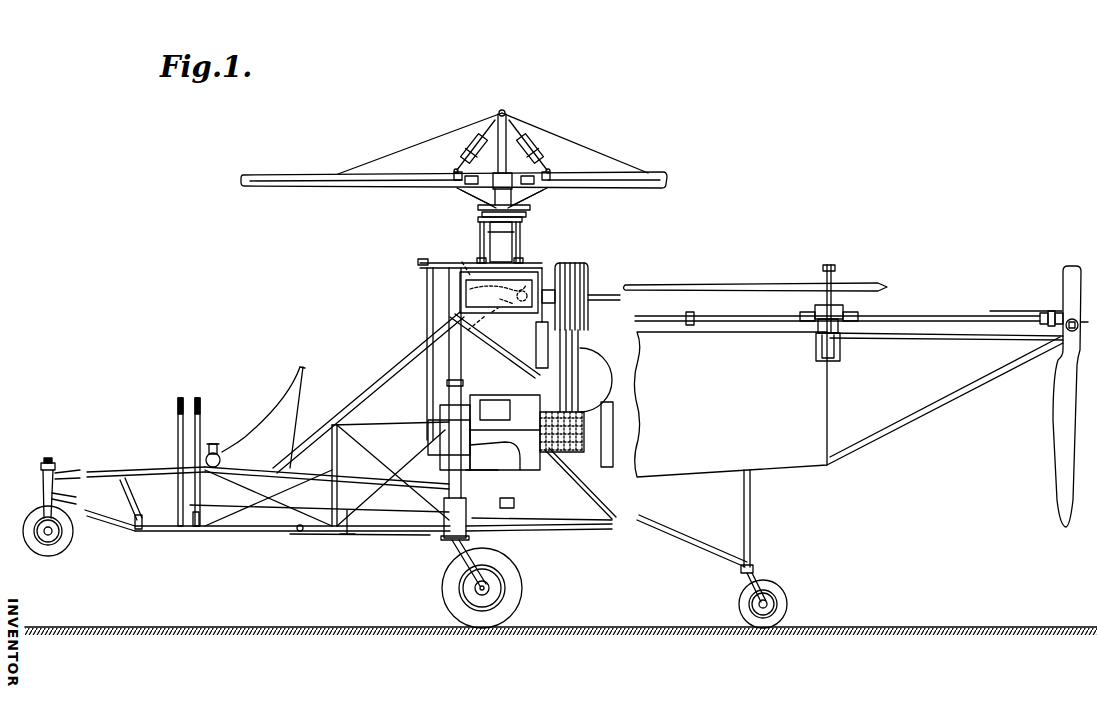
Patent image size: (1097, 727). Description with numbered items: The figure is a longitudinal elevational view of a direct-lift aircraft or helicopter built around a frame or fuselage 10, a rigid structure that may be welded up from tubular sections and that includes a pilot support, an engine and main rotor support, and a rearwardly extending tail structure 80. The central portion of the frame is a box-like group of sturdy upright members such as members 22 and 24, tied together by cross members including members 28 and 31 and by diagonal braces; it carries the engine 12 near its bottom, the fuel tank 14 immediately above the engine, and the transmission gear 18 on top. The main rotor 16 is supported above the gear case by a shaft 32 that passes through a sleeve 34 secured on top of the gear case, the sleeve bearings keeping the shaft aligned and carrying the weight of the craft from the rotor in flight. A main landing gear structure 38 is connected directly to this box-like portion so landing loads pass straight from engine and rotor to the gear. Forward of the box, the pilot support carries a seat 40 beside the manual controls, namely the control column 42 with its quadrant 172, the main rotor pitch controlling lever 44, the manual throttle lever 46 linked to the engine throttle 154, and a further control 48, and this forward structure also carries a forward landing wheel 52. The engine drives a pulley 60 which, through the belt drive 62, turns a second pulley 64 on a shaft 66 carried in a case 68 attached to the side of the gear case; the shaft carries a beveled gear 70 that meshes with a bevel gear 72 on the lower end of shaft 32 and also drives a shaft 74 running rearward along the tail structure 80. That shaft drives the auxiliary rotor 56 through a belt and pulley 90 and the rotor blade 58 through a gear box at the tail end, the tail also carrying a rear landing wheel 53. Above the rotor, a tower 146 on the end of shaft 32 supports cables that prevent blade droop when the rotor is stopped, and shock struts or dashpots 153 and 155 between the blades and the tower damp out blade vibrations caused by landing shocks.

The frame or fuselage 10 is at (408, 540).
The engine 12 is at (470, 412).
The fuel tank 14 is at (448, 342).
The main rotor 16 is at (378, 182).
The transmission gear 18 is at (425, 279).
The upright member 22 is at (406, 362).
The upright member 24 is at (560, 525).
The cross member 28 is at (505, 532).
The cross member 31 is at (458, 300).
The shaft 32 is at (513, 198).
The sleeve 34 is at (500, 246).
The main landing gear structure 38 is at (446, 540).
The seat 40 is at (302, 370).
The control column 42 is at (179, 400).
The main rotor pitch controlling lever 44 is at (200, 400).
The manual throttle lever 46 is at (216, 452).
The manual control 48 is at (124, 492).
The forward landing wheel 52 is at (70, 540).
The rear landing wheel 53 is at (778, 580).
The auxiliary rotor 56 is at (776, 287).
The rotor blade 58 is at (1063, 287).
The pulley 60 is at (570, 456).
The belt drive 62 is at (650, 342).
The second pulley 64 is at (562, 268).
The shaft 66 is at (498, 297).
The case 68 is at (547, 275).
The beveled gear 70 is at (482, 331).
The bevel gear 72 is at (462, 262).
The shaft 74 is at (722, 316).
The tail structure 80 is at (942, 412).
The pulley 90 is at (845, 312).
The tower 146 is at (502, 169).
The shock strut or dashpot 153 is at (468, 156).
The engine throttle 154 is at (520, 520).
The shock strut or dashpot 155 is at (538, 160).
The quadrant 172 is at (194, 522).